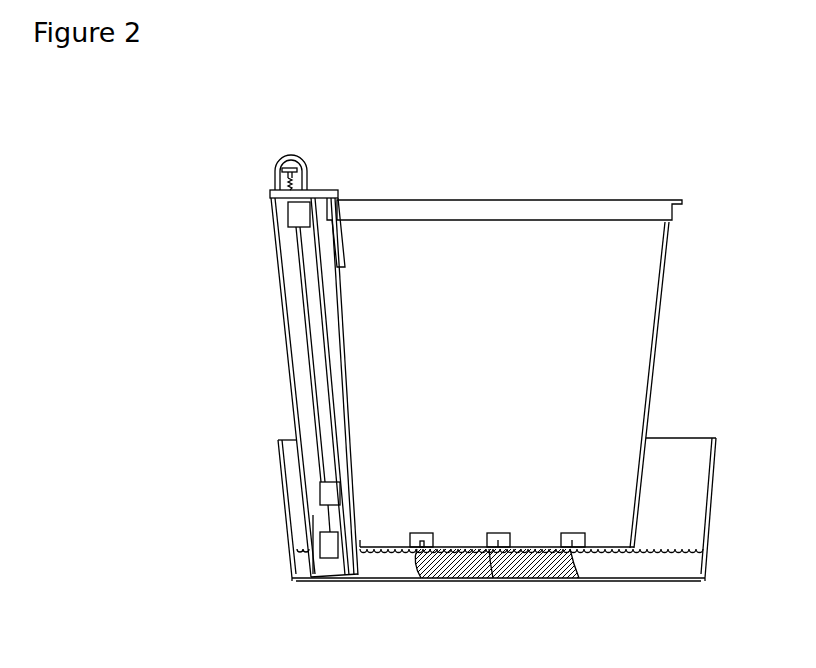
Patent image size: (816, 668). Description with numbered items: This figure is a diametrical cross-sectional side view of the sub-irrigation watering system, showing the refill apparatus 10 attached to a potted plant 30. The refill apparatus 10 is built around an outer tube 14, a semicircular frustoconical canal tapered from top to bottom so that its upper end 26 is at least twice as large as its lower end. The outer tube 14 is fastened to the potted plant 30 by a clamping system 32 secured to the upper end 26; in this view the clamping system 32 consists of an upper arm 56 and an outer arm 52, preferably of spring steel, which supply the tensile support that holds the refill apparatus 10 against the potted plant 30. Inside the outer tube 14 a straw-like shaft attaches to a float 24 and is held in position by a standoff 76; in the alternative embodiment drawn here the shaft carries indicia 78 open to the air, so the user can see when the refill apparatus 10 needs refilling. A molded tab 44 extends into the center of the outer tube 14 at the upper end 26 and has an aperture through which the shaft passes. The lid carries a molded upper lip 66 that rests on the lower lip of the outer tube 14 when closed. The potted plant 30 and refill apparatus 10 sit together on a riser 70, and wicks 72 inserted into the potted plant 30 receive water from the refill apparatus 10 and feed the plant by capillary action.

The refill apparatus 10 is at (253, 147).
The outer tube 14 is at (287, 359).
The float 24 is at (330, 559).
The upper end 26 is at (318, 168).
The potted plant 30 is at (630, 200).
The clamping system 32 is at (345, 267).
The molded tab 44 is at (292, 223).
The outer arm 52 is at (355, 277).
The upper arm 56 is at (330, 188).
The upper lip 66 is at (272, 191).
The riser 70 is at (555, 572).
The wicks 72 is at (492, 561).
The standoff 76 is at (321, 492).
The indicia 78 is at (292, 183).